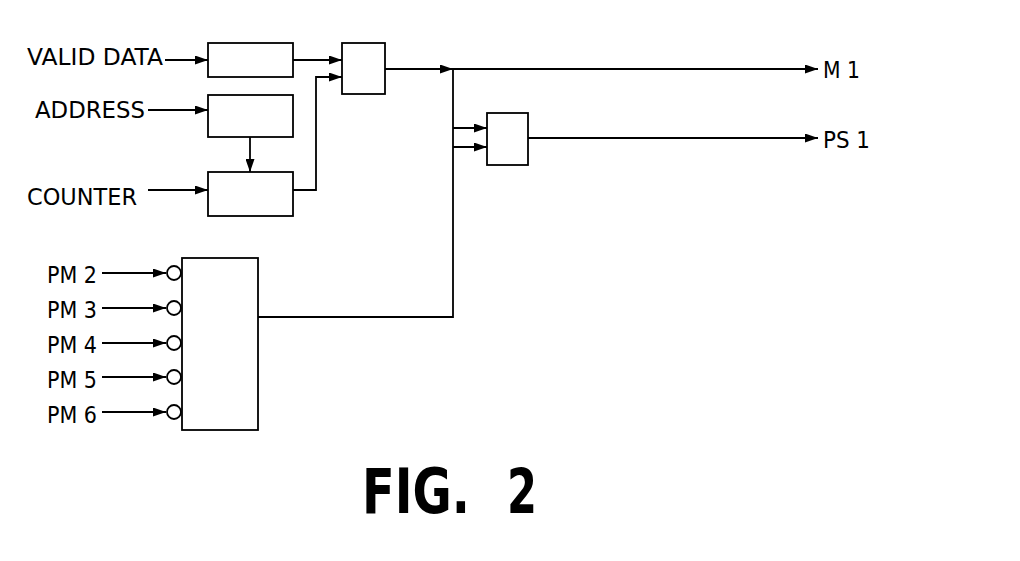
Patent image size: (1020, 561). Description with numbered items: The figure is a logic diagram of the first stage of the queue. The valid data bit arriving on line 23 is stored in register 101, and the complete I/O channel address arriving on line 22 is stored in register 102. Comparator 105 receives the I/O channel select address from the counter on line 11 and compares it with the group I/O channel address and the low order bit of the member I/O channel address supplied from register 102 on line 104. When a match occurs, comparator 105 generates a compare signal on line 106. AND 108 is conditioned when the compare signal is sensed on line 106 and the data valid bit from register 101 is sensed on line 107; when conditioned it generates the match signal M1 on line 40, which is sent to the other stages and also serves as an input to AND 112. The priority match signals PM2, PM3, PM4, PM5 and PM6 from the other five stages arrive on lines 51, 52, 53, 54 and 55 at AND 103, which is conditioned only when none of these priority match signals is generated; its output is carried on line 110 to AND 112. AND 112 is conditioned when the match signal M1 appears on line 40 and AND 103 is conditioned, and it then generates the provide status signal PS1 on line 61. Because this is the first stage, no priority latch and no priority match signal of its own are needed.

The line 11 is at (165, 168).
The line 22 is at (164, 132).
The line 23 is at (164, 31).
The line 40 is at (601, 46).
The line 51 is at (141, 285).
The line 52 is at (141, 320).
The line 53 is at (141, 355).
The line 54 is at (141, 389).
The line 55 is at (141, 424).
The line 61 is at (673, 154).
The register 101 is at (250, 39).
The register 102 is at (220, 104).
The AND 103 is at (203, 324).
The line 104 is at (206, 154).
The comparator 105 is at (276, 205).
The line 106 is at (342, 133).
The line 107 is at (331, 31).
The AND 108 is at (389, 48).
The line 110 is at (372, 222).
The AND 112 is at (536, 151).